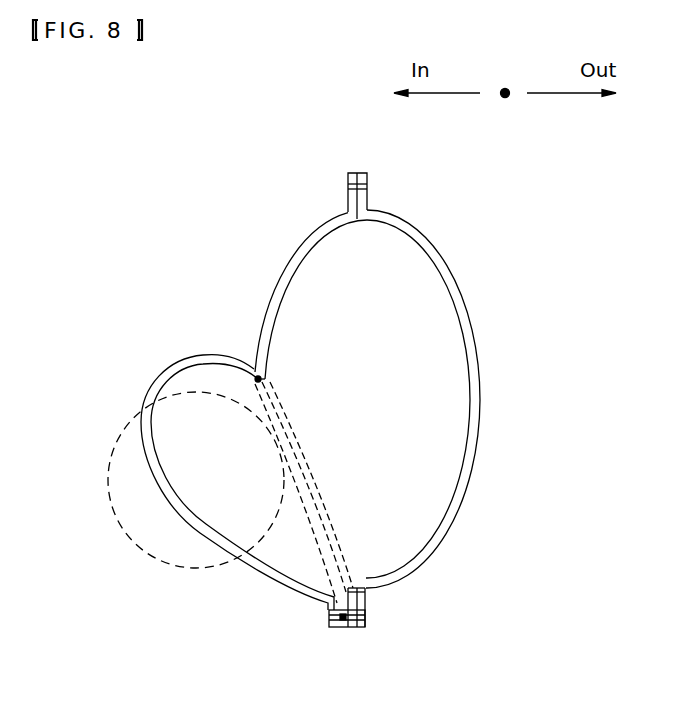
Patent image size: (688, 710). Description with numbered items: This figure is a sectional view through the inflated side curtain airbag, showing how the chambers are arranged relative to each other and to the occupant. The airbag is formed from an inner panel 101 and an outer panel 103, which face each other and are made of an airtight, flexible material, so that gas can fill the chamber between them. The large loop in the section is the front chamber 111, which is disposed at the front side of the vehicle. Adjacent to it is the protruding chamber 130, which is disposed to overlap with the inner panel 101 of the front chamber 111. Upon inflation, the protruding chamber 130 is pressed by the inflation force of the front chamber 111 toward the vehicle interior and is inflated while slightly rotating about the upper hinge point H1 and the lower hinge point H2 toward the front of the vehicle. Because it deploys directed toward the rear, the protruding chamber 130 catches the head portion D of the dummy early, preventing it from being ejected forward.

The inner panel 101 is at (280, 267).
The outer panel 103 is at (428, 243).
The front chamber 111 is at (413, 332).
The protruding chamber 130 is at (217, 468).
The upper hinge point H1 is at (257, 373).
The lower hinge point H2 is at (343, 617).
The head portion of the dummy D is at (110, 492).